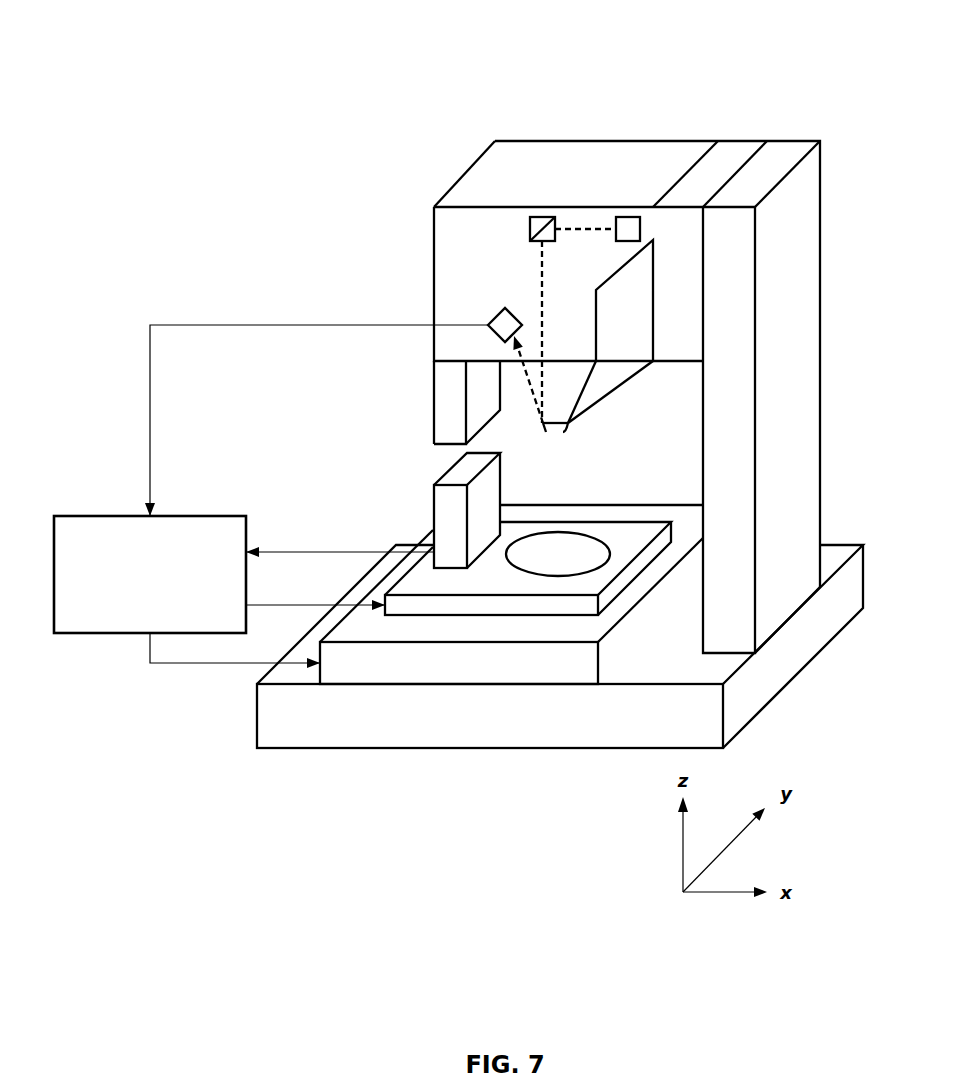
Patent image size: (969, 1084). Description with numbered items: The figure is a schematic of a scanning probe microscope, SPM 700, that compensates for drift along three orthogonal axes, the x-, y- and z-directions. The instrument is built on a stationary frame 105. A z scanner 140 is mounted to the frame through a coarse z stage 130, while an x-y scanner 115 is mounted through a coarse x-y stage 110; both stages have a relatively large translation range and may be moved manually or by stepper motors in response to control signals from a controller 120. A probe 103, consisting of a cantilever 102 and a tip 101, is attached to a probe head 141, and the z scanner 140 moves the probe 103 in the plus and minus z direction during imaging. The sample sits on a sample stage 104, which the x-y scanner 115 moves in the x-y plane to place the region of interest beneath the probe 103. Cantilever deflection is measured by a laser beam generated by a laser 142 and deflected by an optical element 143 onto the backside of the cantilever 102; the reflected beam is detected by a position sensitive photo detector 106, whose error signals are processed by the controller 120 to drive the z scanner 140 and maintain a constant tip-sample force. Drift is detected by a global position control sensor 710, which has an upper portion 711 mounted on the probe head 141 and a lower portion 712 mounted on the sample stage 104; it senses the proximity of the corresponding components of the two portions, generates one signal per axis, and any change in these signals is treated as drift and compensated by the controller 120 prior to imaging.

The SPM 700 is at (455, 30).
The stationary frame 105 is at (472, 731).
The z stage 130 is at (740, 141).
The probe head 141 is at (502, 185).
The laser 142 is at (628, 217).
The optical element 143 is at (541, 217).
The z scanner 140 is at (609, 341).
The position sensitive photo detector 106 is at (496, 316).
The tip 101 is at (546, 430).
The cantilever 102 is at (563, 430).
The probe 103 is at (580, 436).
The upper portion 711 is at (434, 403).
The lower portion 712 is at (434, 505).
The global position control sensor 710 is at (352, 362).
The x-y stage 110 is at (435, 676).
The x-y scanner 115 is at (628, 588).
The sample stage 104 is at (540, 566).
The controller 120 is at (132, 599).